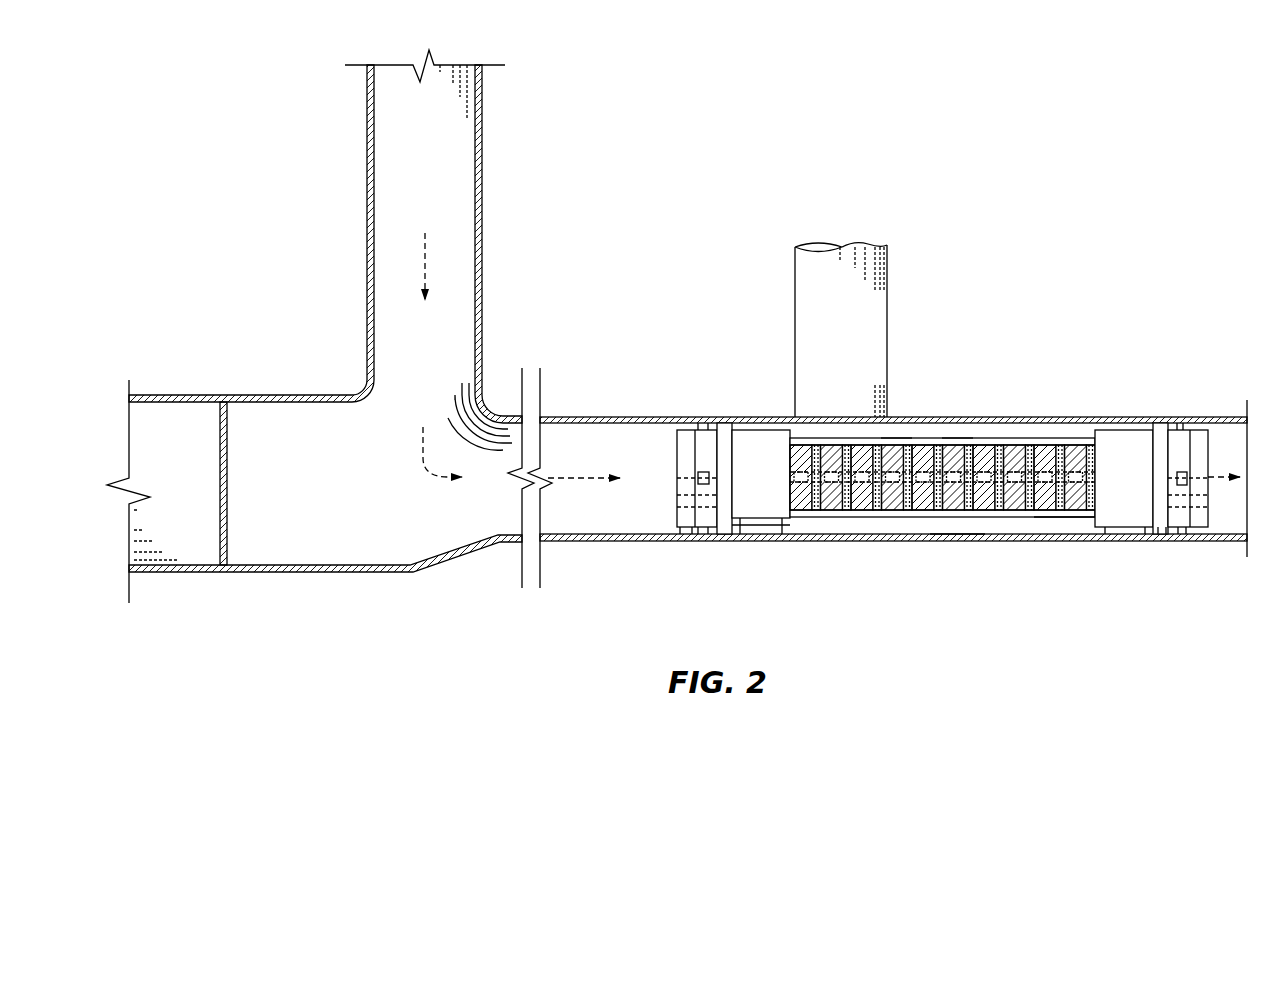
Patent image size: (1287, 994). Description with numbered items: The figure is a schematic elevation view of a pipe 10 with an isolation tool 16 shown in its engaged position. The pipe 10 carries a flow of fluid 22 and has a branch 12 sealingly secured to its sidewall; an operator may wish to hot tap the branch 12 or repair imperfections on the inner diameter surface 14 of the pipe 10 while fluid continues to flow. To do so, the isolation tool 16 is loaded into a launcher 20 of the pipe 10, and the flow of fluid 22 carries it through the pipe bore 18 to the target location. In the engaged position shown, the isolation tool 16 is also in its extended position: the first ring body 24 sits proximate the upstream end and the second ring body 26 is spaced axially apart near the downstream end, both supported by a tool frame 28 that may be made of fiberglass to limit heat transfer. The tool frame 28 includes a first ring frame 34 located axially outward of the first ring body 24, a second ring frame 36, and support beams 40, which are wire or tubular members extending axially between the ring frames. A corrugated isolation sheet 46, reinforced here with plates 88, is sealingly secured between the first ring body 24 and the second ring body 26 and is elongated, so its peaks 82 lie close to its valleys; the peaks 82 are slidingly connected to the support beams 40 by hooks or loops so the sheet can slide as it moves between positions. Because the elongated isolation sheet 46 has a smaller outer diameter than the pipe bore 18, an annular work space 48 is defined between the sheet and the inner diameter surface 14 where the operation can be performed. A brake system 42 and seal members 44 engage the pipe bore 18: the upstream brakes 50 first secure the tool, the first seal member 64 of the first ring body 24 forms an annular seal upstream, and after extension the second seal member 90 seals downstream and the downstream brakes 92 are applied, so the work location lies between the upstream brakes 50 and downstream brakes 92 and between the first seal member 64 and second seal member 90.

The pipe 10 is at (941, 507).
The branch 12 is at (887, 290).
The inner diameter surface 14 is at (607, 423).
The isolation tool 16 is at (957, 545).
The pipe bore 18 is at (592, 520).
The launcher 20 is at (185, 560).
The flow of fluid 22 is at (423, 455).
The first ring body 24 is at (767, 533).
The second ring body 26 is at (1125, 530).
The tool frame 28 is at (1070, 515).
The first ring frame 34 is at (688, 533).
The second ring frame 36 is at (1203, 533).
The support beams 40 is at (927, 518).
The brake system 42 is at (1183, 425).
The seal members 44 is at (1162, 420).
The isolation sheet 46 is at (943, 445).
The annular work space 48 is at (1022, 542).
The upstream brakes 50 is at (705, 423).
The first seal member 64 is at (725, 423).
The peaks 82 is at (887, 445).
The plates 88 is at (835, 485).
The second seal member 90 is at (1162, 533).
The downstream brakes 92 is at (1182, 535).